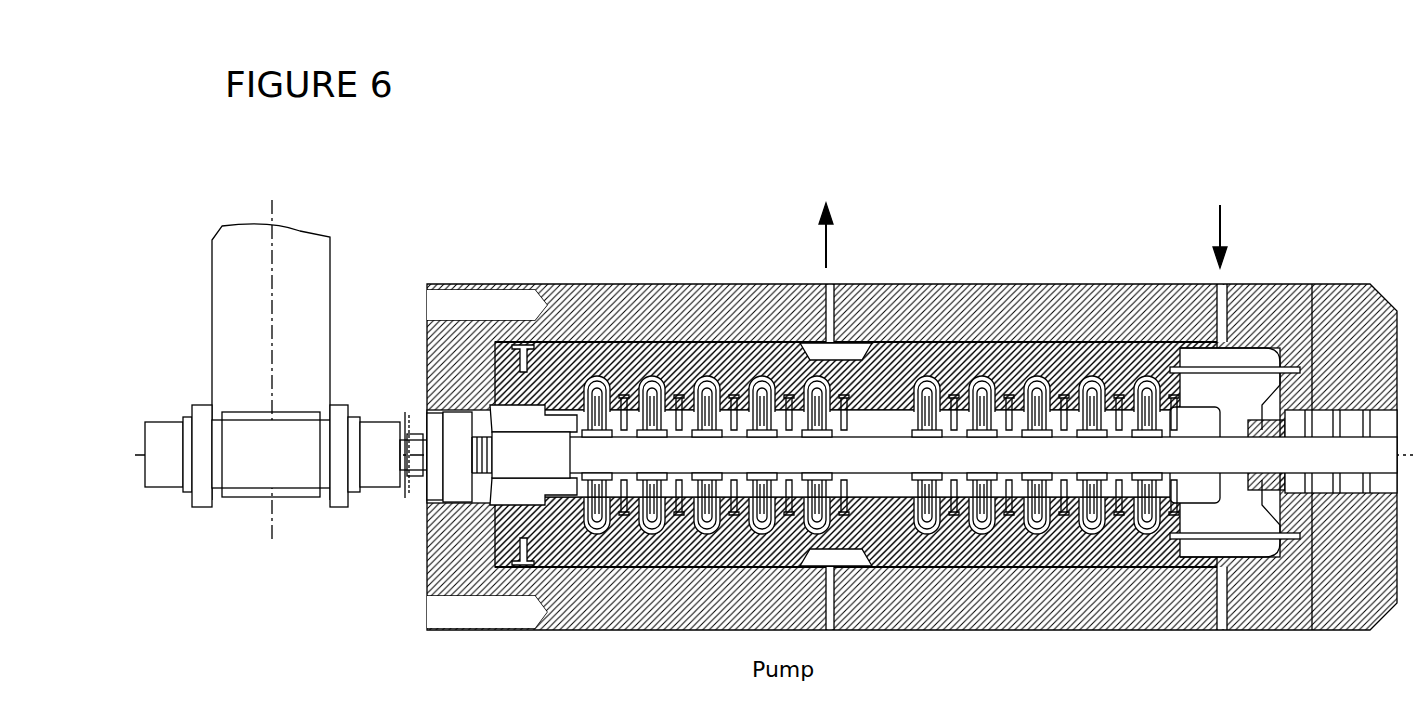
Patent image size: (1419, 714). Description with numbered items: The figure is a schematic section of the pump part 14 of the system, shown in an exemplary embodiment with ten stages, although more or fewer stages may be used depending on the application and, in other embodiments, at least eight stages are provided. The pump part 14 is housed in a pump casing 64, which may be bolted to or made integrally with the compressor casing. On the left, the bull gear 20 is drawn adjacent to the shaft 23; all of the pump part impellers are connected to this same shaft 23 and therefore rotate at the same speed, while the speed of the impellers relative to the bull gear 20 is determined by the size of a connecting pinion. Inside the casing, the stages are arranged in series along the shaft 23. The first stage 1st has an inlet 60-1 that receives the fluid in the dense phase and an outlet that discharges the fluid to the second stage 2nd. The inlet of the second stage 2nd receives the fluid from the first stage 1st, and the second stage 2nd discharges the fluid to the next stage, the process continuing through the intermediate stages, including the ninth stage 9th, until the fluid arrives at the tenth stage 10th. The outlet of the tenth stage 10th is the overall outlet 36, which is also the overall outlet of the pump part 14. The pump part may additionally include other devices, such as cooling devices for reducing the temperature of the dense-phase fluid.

The pump part 14 is at (1072, 201).
The bull gear 20 is at (280, 253).
The shaft 23 is at (415, 478).
The overall outlet 36 is at (829, 247).
The inlet 60-1 is at (1228, 230).
The pump casing 64 is at (627, 295).
The first stage 1st is at (1140, 532).
The second stage 2nd is at (1094, 530).
The ninth stage 9th is at (752, 385).
The tenth stage 10th is at (812, 385).